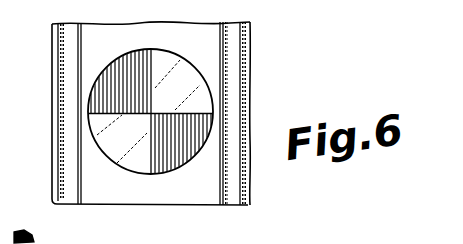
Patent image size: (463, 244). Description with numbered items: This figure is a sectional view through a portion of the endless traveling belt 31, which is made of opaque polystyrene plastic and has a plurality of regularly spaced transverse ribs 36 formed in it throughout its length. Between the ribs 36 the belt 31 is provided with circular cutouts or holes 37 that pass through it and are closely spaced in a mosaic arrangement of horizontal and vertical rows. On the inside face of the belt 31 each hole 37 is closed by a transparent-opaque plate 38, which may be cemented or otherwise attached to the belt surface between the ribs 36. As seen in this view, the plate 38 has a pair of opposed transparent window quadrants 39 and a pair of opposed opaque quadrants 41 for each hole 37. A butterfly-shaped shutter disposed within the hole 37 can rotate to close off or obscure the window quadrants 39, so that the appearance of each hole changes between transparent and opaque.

The endless traveling belt 31 is at (48, 122).
The transverse ribs 36 is at (65, 143).
The circular cutouts or holes 37 is at (0, 219).
The transparent-opaque plates 38 is at (213, 55).
The transparent window quadrants 39 is at (203, 98).
The opaque quadrants 41 is at (115, 67).